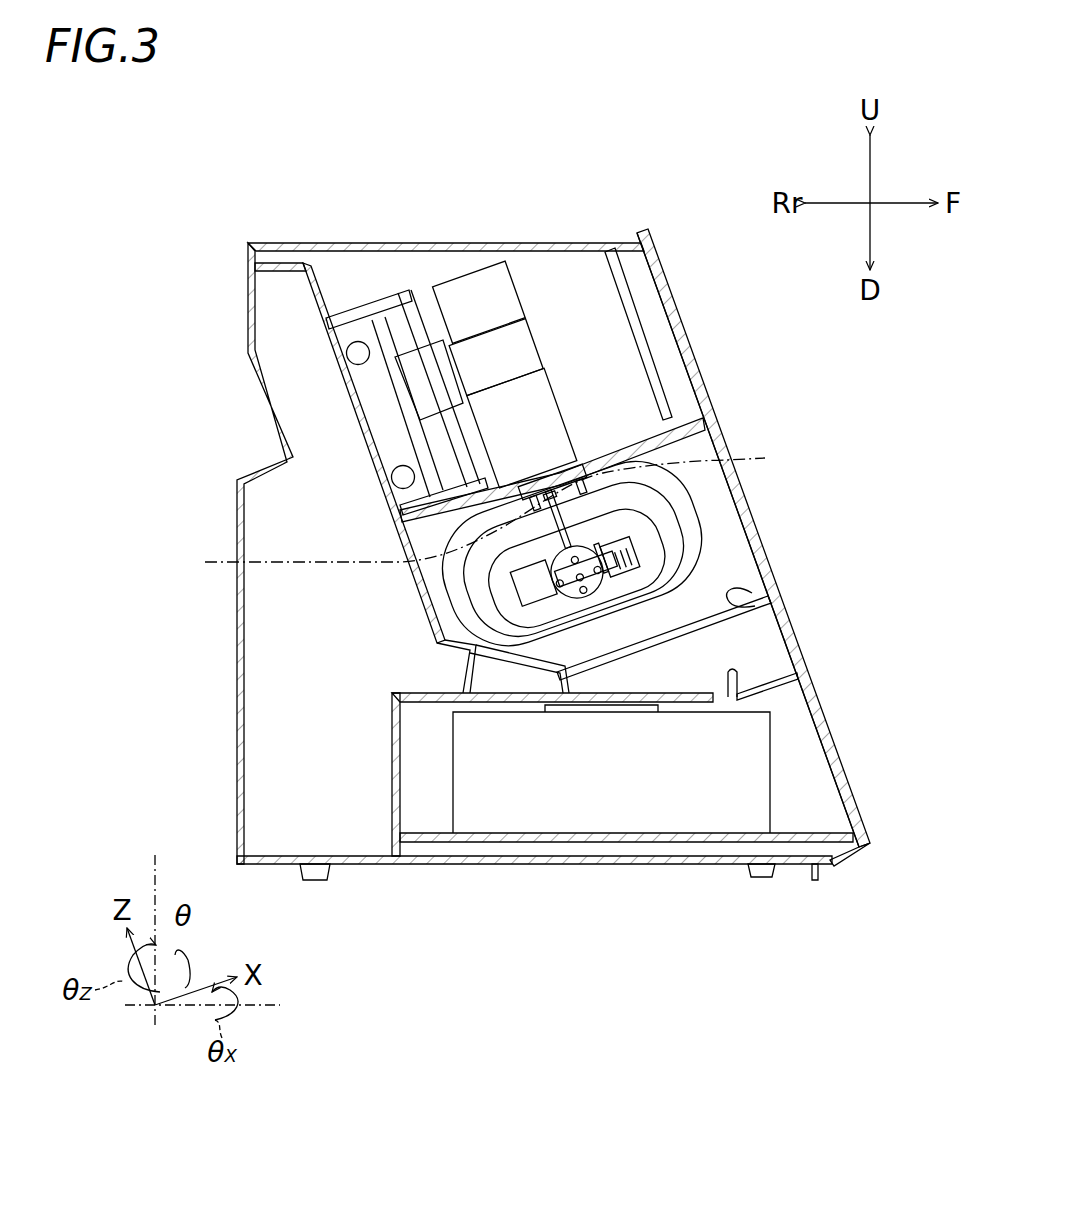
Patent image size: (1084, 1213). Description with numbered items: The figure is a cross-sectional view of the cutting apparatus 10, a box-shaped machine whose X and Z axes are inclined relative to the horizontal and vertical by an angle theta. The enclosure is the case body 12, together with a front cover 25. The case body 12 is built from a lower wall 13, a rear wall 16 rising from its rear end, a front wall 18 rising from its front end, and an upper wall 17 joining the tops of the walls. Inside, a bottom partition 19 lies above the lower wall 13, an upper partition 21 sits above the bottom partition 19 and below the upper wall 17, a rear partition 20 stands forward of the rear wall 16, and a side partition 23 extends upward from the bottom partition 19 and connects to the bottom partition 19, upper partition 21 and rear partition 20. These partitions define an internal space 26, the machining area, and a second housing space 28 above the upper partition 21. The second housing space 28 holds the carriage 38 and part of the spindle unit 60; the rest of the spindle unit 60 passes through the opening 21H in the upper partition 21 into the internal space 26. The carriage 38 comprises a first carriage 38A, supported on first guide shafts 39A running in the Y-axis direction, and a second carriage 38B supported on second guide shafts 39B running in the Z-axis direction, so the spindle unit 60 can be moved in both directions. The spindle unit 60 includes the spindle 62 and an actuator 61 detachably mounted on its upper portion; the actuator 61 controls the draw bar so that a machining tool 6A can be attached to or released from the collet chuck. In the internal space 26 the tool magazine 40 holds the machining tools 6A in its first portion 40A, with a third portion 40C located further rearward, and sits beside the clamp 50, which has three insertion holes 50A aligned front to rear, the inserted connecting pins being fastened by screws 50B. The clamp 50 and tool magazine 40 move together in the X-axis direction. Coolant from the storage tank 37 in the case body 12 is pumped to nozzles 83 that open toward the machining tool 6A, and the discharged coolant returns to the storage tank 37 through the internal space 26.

The cutting apparatus 10 is at (690, 205).
The case body 12 is at (808, 668).
The lower wall 13 is at (415, 866).
The rear wall 16 is at (237, 785).
The upper wall 17 is at (604, 321).
The front wall 18 is at (648, 353).
The bottom partition 19 is at (755, 643).
The rear partition 20 is at (500, 580).
The upper partition 21 is at (625, 452).
The opening 21H is at (483, 511).
The side partition 23 is at (740, 558).
The front cover 25 is at (667, 288).
The internal space 26 is at (770, 596).
The second housing space 28 is at (588, 272).
The storage tank 37 is at (773, 777).
The carriage 38 is at (347, 306).
The first carriage 38A is at (370, 390).
The second carriage 38B is at (425, 346).
The first guide shafts 39A is at (347, 352).
The second guide shafts 39B is at (398, 293).
The tool magazine 40 is at (735, 705).
The first portion 40A is at (665, 702).
The third portion 40C is at (515, 645).
The clamp 50 is at (582, 600).
The insertion holes 50A is at (548, 625).
The screws 50B is at (550, 603).
The spindle unit 60 is at (496, 357).
The actuator 61 is at (479, 302).
The spindle 62 is at (522, 428).
The machining tools 6A is at (598, 500).
The nozzles 83 is at (462, 560).